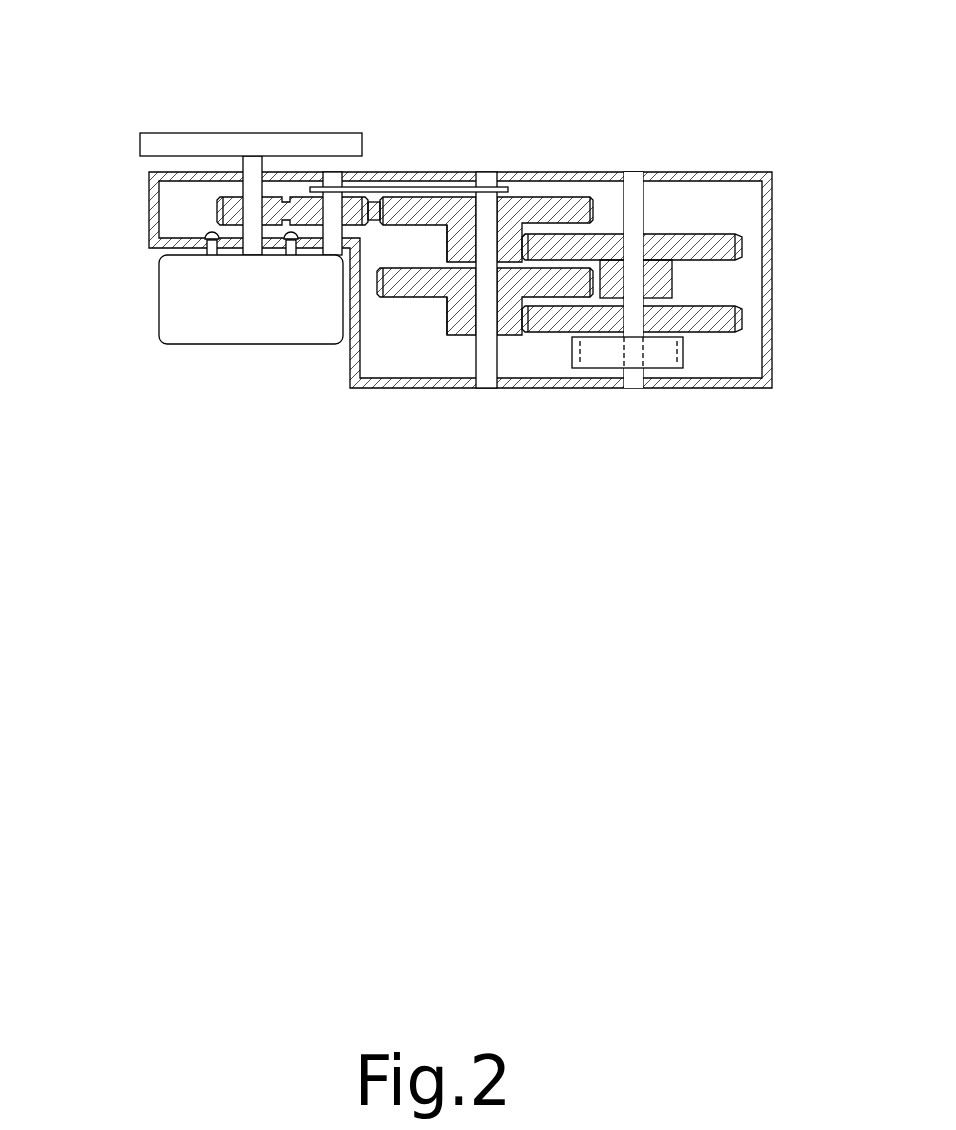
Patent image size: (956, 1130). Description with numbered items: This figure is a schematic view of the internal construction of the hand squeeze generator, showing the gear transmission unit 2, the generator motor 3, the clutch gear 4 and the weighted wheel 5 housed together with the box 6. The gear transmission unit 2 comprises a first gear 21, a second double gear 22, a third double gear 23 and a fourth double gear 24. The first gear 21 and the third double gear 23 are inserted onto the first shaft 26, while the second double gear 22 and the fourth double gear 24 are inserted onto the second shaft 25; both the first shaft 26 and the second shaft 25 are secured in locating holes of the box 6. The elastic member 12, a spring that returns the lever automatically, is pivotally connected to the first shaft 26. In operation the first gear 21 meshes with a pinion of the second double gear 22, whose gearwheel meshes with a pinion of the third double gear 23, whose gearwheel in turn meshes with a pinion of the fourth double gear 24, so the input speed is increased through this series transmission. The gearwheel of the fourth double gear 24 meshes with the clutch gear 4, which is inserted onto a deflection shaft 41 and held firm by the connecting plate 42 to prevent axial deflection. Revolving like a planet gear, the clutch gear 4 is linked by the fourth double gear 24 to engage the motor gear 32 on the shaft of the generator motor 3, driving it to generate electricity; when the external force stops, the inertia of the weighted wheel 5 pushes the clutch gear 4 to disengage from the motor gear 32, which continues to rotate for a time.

The gear transmission unit 2 is at (547, 355).
The generator motor 3 is at (177, 317).
The clutch gear 4 is at (358, 210).
The weighted wheel 5 is at (183, 140).
The box 6 is at (753, 177).
The elastic member 12 is at (668, 357).
The first gear 21 is at (720, 322).
The second double gear 22 is at (445, 283).
The third double gear 23 is at (717, 248).
The fourth double gear 24 is at (550, 213).
The second shaft 25 is at (483, 210).
The first shaft 26 is at (635, 207).
The motor gear 32 is at (235, 212).
The deflection shaft 41 is at (335, 178).
The connecting plate 42 is at (445, 190).